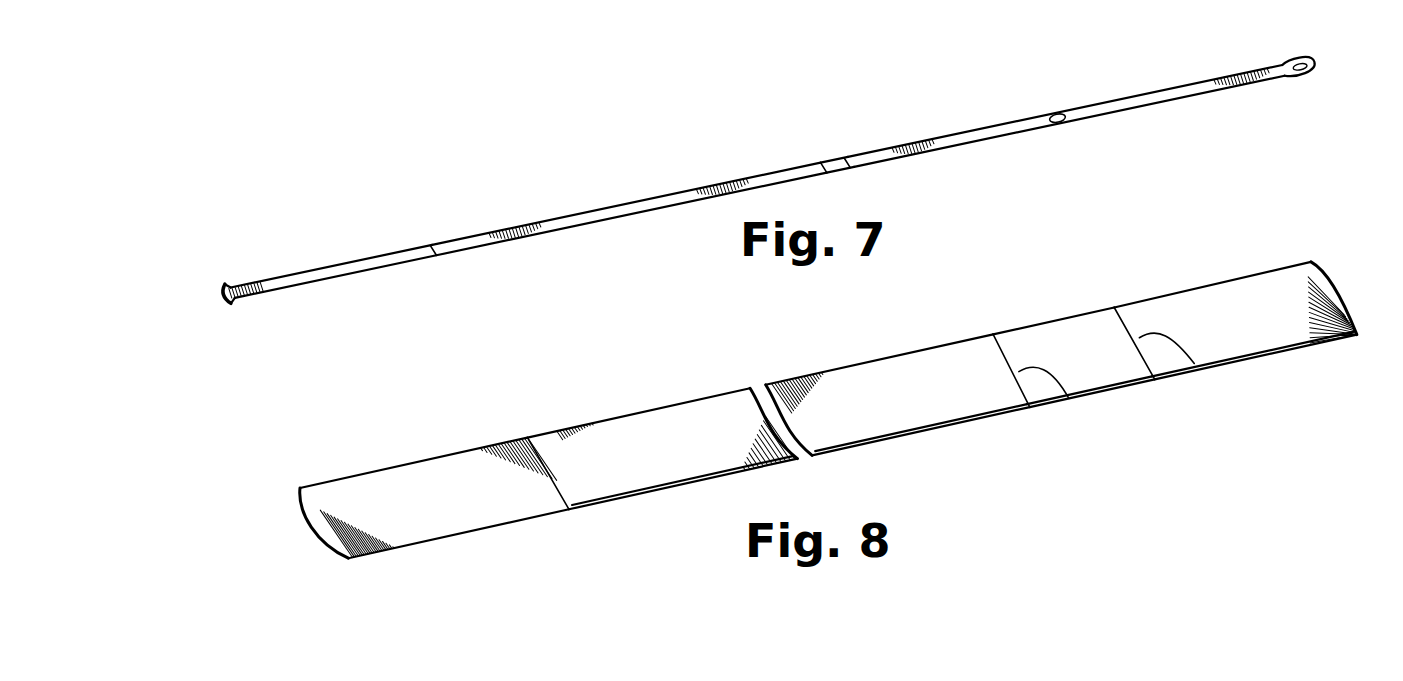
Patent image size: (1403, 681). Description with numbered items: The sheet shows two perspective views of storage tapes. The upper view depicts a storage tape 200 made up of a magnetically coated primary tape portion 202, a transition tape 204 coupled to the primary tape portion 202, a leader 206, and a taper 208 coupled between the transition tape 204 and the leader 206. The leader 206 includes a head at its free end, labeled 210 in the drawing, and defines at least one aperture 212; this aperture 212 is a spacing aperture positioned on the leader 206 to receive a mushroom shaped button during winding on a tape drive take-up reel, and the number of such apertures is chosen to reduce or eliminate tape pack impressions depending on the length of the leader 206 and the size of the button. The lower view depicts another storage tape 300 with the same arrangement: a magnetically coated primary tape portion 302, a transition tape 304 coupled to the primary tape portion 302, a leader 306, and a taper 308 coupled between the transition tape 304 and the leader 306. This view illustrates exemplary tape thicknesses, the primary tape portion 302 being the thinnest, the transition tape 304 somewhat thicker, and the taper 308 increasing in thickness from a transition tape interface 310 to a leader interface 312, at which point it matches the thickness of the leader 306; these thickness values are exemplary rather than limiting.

In FIG. 7, the storage tape 200 is at (510, 160).
In FIG. 7, the primary tape portion 202 is at (312, 265).
In FIG. 7, the transition tape 204 is at (620, 203).
In FIG. 7, the leader 206 is at (967, 130).
In FIG. 7, the taper 208 is at (830, 155).
In FIG. 7, the eyelet end 210 is at (1298, 52).
In FIG. 7, the aperture 212 is at (1070, 120).
In FIG. 8, the storage tape 300 is at (580, 362).
In FIG. 8, the primary tape portion 302 is at (410, 463).
In FIG. 8, the transition tape 304 is at (648, 415).
In FIG. 8, the leader 306 is at (1216, 290).
In FIG. 8, the taper 308 is at (1050, 328).
In FIG. 8, the transition tape interface 310 is at (1070, 400).
In FIG. 8, the leader interface 312 is at (1193, 363).